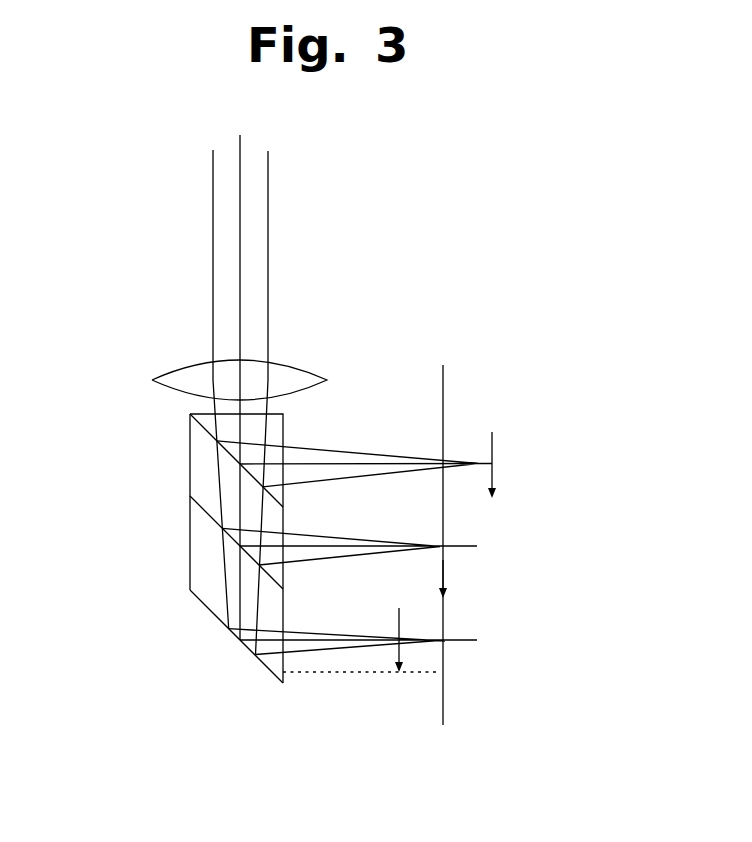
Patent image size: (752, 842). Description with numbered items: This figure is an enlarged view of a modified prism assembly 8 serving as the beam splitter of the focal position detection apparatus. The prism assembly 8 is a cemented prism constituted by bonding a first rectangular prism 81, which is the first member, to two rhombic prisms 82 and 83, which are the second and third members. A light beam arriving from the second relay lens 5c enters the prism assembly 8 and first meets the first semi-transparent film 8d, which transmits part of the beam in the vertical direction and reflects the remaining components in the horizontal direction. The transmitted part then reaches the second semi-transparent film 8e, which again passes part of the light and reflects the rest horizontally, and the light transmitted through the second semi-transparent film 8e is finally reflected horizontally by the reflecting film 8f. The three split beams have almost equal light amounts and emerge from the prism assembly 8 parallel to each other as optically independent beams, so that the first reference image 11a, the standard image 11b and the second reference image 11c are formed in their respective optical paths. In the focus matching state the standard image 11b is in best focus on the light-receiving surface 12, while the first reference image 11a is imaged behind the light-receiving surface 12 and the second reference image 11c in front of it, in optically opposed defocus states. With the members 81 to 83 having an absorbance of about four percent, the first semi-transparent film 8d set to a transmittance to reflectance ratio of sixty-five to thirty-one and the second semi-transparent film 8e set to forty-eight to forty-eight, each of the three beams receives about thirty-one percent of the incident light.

The second relay lens 5c is at (327, 380).
The prism assembly 8 is at (181, 473).
The first semi-transparent film 8d is at (189, 429).
The second semi-transparent film 8e is at (190, 518).
The reflecting film 8f is at (201, 605).
The first rectangular prism 81 is at (285, 430).
The rhombic prism 82 is at (285, 517).
The rhombic prism 83 is at (285, 607).
The first reference image 11a is at (492, 447).
The standard image 11b is at (443, 577).
The second reference image 11c is at (399, 620).
The light-receiving surface 12 is at (443, 378).